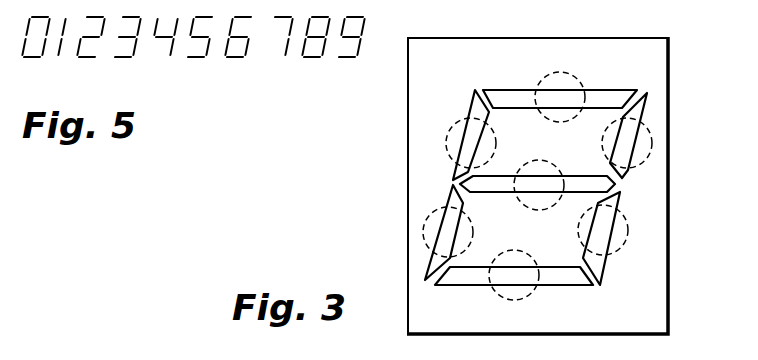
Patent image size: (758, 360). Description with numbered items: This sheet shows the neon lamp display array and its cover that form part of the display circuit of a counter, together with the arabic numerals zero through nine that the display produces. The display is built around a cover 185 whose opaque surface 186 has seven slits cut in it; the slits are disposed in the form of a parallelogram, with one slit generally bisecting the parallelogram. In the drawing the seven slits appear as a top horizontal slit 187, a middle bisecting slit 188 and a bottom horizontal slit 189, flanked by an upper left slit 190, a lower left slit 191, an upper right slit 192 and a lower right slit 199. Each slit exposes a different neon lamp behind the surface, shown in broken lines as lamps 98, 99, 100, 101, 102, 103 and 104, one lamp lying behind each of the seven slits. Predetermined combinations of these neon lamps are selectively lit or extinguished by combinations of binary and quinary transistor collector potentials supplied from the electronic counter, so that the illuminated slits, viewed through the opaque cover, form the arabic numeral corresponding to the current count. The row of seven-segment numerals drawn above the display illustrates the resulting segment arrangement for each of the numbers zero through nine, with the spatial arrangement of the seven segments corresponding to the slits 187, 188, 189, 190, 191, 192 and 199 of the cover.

The display housing 185 is at (668, 38).
The display face plate 186 is at (670, 109).
The top horizontal segment 187 is at (530, 90).
The middle horizontal segment 188 is at (503, 176).
The bottom horizontal segment 189 is at (459, 286).
The upper left vertical segment 190 is at (472, 99).
The lower left vertical segment 191 is at (450, 204).
The upper right vertical segment 192 is at (628, 170).
The lower right vertical segment 199 is at (604, 276).
The light source for top segment 98 is at (577, 78).
The light source for middle segment 99 is at (546, 165).
The light source for bottom segment 100 is at (526, 256).
The light source for upper left segment 101 is at (449, 134).
The light source for lower left segment 102 is at (474, 238).
The light source for upper right segment 103 is at (604, 140).
The light source for lower right segment 104 is at (580, 235).